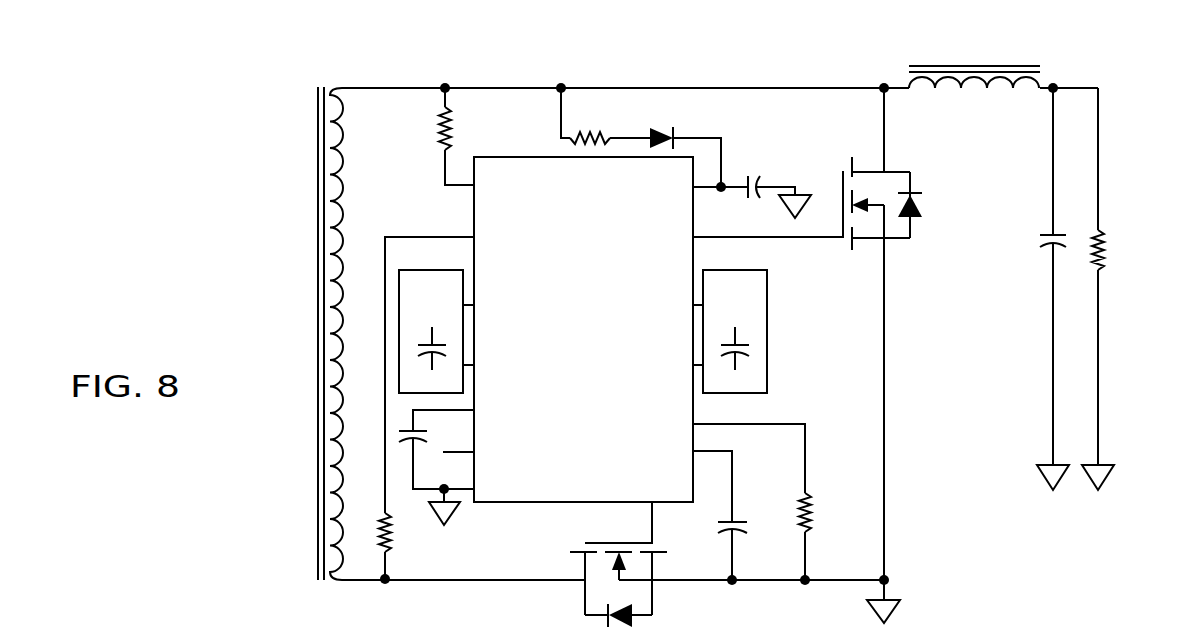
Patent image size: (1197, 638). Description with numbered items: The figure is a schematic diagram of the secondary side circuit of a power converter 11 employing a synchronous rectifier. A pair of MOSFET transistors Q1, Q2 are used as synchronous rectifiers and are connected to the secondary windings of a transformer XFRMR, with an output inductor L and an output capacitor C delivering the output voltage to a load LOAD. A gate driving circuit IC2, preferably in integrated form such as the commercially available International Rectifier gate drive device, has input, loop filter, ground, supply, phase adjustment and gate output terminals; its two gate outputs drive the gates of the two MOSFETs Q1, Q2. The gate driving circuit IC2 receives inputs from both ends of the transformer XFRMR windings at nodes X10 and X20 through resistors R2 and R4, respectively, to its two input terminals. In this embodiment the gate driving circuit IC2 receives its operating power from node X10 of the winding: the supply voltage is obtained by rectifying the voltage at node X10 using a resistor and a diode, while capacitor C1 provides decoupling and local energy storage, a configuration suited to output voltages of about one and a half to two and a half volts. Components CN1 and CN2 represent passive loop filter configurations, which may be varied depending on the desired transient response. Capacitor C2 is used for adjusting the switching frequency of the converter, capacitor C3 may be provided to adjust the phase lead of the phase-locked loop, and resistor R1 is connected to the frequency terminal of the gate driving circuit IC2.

The power converter 11 is at (685, 63).
The gate driving circuit IC2 is at (592, 343).
The MOSFET transistor Q1 is at (903, 163).
The MOSFET transistor Q2 is at (572, 600).
The resistor R1 is at (770, 504).
The resistor R2 is at (435, 136).
The resistor R4 is at (426, 408).
The capacitor C1 is at (752, 174).
The capacitor C2 is at (436, 467).
The capacitor C3 is at (714, 518).
The output capacitor C is at (1042, 289).
The output inductor L is at (974, 102).
The passive loop filter CN1 is at (436, 331).
The passive loop filter CN2 is at (730, 331).
The node X10 is at (438, 65).
The node X20 is at (381, 599).
The transformer XFRMR is at (282, 333).
The load LOAD is at (1128, 289).